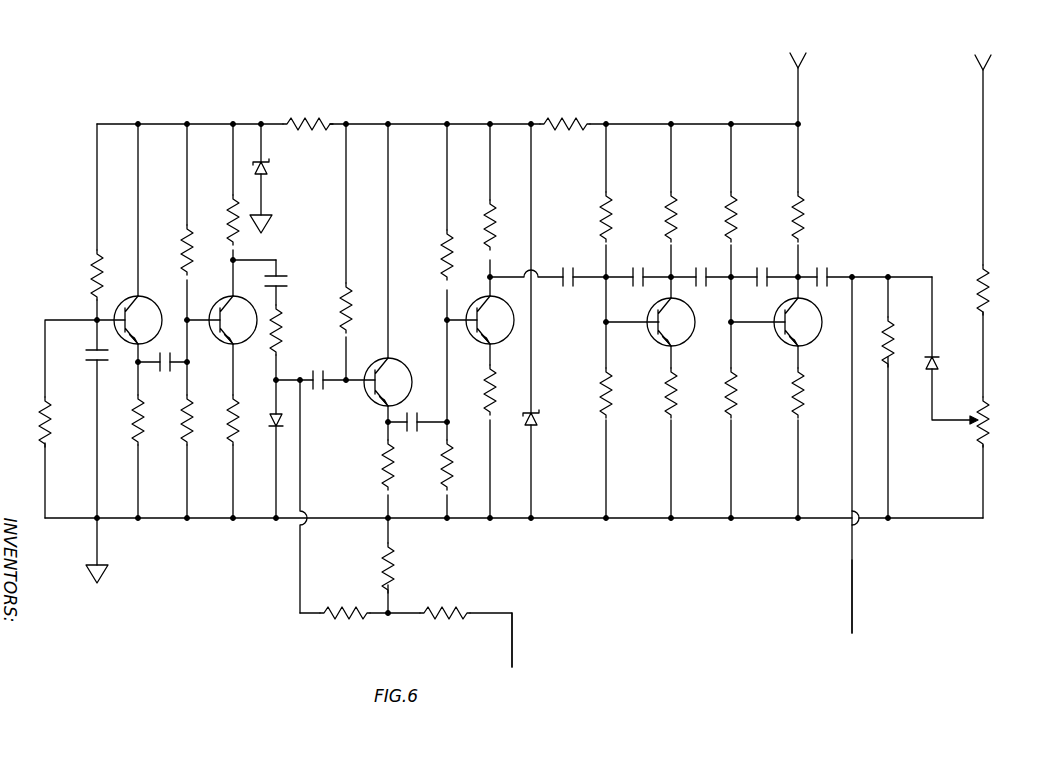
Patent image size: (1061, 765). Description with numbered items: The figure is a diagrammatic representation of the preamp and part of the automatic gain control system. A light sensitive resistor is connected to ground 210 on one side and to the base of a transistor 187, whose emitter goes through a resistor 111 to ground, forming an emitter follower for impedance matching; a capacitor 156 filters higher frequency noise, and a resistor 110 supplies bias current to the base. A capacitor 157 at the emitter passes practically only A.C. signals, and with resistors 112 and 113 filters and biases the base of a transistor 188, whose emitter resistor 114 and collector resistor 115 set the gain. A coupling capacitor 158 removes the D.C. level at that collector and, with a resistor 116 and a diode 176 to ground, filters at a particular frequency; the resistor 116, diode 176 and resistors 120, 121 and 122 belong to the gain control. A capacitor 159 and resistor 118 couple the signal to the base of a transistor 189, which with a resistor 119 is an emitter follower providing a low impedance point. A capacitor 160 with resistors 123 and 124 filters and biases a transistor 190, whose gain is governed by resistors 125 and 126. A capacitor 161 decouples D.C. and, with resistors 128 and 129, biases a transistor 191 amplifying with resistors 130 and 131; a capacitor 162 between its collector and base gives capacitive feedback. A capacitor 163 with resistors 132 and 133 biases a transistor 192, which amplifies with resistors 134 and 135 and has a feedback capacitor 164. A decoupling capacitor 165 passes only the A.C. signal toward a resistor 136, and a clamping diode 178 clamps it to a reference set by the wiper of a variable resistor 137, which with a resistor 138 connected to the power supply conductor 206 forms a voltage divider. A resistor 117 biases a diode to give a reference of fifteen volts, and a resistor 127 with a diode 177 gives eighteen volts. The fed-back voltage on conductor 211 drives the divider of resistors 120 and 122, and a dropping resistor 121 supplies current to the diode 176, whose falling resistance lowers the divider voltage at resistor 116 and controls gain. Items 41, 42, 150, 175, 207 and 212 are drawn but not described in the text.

The resistor 110 is at (96, 268).
The resistor 150 is at (42, 420).
The capacitor 156 is at (95, 356).
The transistor 187 is at (140, 300).
The transistor 188 is at (220, 300).
The resistor 113 is at (186, 252).
The resistor 115 is at (231, 215).
The zener diode 175 is at (263, 190).
The capacitor 157 is at (166, 372).
The resistor 111 is at (136, 428).
The resistor 112 is at (185, 422).
The resistor 114 is at (231, 427).
The capacitor 158 is at (279, 280).
The resistor 116 is at (275, 332).
The diode 176 is at (272, 430).
The resistor 117 is at (300, 118).
The supply line 41 is at (436, 113).
The resistor 118 is at (342, 310).
The capacitor 159 is at (320, 392).
The transistor 189 is at (376, 412).
The capacitor 160 is at (416, 405).
The resistor 119 is at (386, 472).
The resistor 123 is at (445, 472).
The resistor 124 is at (445, 260).
The resistor 126 is at (488, 220).
The transistor 190 is at (485, 341).
The resistor 125 is at (488, 402).
The diode 177 is at (535, 432).
The resistor 127 is at (565, 118).
The capacitor 161 is at (567, 288).
The capacitor 162 is at (639, 268).
The capacitor 163 is at (702, 268).
The feedback capacitor 164 is at (764, 268).
The capacitor 165 is at (826, 272).
The resistor 129 is at (604, 212).
The resistor 131 is at (669, 212).
The resistor 133 is at (729, 212).
The resistor 135 is at (796, 212).
The resistor 128 is at (604, 386).
The transistor 191 is at (665, 346).
The resistor 130 is at (669, 413).
The resistor 132 is at (729, 411).
The transistor 192 is at (805, 344).
The resistor 134 is at (796, 413).
The antenna terminal 207 is at (802, 84).
The conductor 206 is at (986, 74).
The resistor 138 is at (988, 292).
The resistor 136 is at (890, 327).
The clamping diode 178 is at (930, 371).
The variable resistor 137 is at (988, 434).
The output lead 212 is at (854, 602).
The ground 210 is at (108, 580).
The ground line 42 is at (283, 549).
The resistor 120 is at (386, 564).
The resistor 121 is at (340, 620).
The resistor 122 is at (445, 605).
The conductor 211 is at (515, 642).